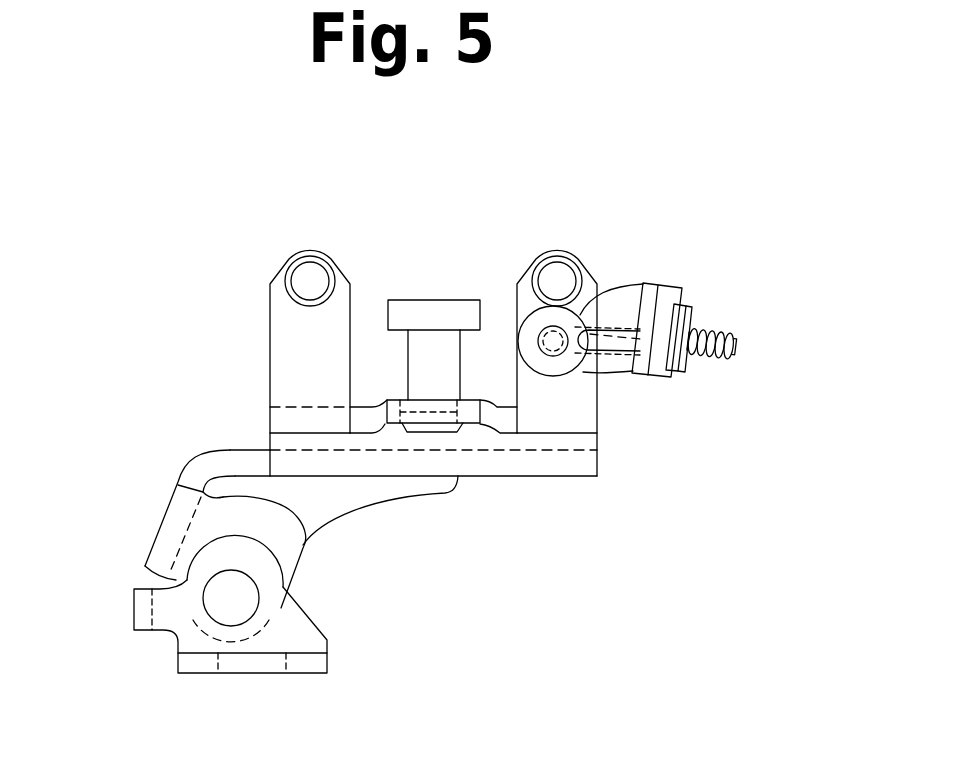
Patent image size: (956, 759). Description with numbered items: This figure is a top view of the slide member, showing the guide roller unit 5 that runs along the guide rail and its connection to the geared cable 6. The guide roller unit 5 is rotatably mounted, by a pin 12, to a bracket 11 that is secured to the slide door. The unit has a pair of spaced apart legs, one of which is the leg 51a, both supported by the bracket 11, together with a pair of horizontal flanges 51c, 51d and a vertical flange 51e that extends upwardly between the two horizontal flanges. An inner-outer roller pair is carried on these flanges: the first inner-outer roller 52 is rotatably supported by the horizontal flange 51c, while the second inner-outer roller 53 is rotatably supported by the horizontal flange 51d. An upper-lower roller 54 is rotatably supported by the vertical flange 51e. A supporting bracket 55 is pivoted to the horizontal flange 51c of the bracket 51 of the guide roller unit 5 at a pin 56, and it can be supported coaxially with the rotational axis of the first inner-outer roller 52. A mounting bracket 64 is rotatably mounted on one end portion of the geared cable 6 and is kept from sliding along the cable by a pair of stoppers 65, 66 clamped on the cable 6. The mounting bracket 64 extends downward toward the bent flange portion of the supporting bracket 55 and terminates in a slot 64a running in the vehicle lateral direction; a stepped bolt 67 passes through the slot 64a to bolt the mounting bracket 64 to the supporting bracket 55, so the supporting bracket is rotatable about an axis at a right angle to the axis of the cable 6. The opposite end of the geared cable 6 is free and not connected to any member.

The guide roller unit 5 is at (497, 503).
The geared cable 6 is at (727, 353).
The bracket 11 is at (302, 635).
The pin 12 is at (227, 597).
The bracket 51 is at (197, 452).
The leg 51a is at (281, 552).
The horizontal flange 51c is at (585, 412).
The horizontal flange 51d is at (277, 350).
The vertical flange 51e is at (400, 397).
The first inner-outer roller 52 is at (563, 255).
The second inner-outer roller 53 is at (311, 255).
The upper-lower roller 54 is at (441, 300).
The supporting bracket 55 is at (600, 303).
The pin 56 is at (520, 318).
The mounting bracket 64 is at (663, 283).
The slot 64a is at (683, 323).
The stopper 65 is at (566, 378).
The stopper 66 is at (636, 283).
The stepped bolt 67 is at (673, 371).